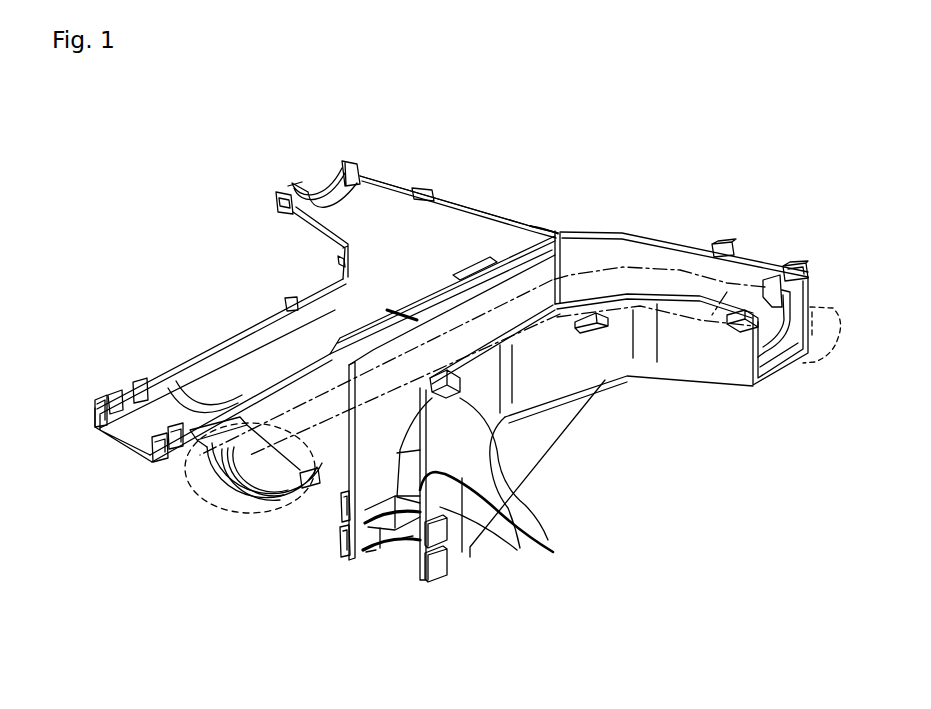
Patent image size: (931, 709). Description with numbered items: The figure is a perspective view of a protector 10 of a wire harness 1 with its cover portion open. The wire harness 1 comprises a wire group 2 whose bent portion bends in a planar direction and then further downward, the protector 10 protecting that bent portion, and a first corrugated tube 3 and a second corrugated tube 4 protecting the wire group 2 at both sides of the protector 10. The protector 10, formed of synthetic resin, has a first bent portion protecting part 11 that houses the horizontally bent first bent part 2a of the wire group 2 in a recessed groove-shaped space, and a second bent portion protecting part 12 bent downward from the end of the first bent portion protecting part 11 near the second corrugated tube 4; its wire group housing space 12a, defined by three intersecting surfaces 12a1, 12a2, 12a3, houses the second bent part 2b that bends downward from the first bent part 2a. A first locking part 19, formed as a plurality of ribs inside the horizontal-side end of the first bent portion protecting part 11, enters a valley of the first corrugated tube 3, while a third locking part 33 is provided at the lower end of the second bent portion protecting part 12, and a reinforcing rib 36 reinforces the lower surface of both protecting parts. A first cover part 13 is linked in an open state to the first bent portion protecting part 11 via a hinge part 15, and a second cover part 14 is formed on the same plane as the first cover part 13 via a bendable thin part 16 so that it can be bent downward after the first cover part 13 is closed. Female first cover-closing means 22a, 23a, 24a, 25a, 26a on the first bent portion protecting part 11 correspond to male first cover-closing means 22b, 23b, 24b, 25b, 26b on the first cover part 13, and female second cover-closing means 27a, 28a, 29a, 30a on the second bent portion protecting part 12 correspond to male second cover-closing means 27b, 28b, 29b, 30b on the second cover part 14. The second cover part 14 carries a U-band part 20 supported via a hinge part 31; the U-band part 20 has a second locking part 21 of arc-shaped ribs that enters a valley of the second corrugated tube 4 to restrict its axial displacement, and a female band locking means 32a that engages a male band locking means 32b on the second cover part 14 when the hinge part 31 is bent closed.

The wire harness 1 is at (630, 139).
The wire group 2 is at (637, 243).
The first bent part 2a is at (732, 340).
The second bent part 2b is at (333, 413).
The first corrugated tube 3 is at (805, 366).
The second corrugated tube 4 is at (193, 505).
The protector 10 is at (602, 233).
The first bent portion protecting part 11 is at (683, 235).
The second bent portion protecting part 12 is at (470, 508).
The wire group housing space 12a is at (360, 527).
The intersecting surface 12a1 is at (408, 530).
The intersecting surface 12a2 is at (372, 553).
The intersecting surface 12a3 is at (556, 552).
The first cover part 13 is at (450, 226).
The second cover part 14 is at (237, 363).
The hinge part 15 is at (558, 230).
The thin part 16 is at (300, 343).
The first locking part 19 is at (806, 315).
The U-band part 20 is at (258, 505).
The second locking part 21 is at (233, 522).
The female first cover-closing means 22a is at (800, 263).
The male first cover-closing means 22b is at (352, 160).
The female first cover-closing means 23a is at (723, 243).
The male first cover-closing means 23b is at (420, 188).
The female first cover-closing means 24a is at (743, 326).
The male first cover-closing means 24b is at (275, 205).
The female first cover-closing means 25a is at (600, 332).
The male first cover-closing means 25b is at (338, 259).
The female first cover-closing means 26a is at (462, 398).
The male first cover-closing means 26b is at (287, 299).
The female second cover-closing means 27a is at (441, 586).
The male second cover-closing means 27b is at (95, 400).
The female second cover-closing means 28a is at (442, 540).
The male second cover-closing means 28b is at (110, 395).
The female second cover-closing means 29a is at (343, 556).
The male second cover-closing means 29b is at (157, 461).
The female second cover-closing means 30a is at (343, 521).
The male second cover-closing means 30b is at (178, 450).
The hinge part 31 is at (218, 417).
The female band locking means 32a is at (302, 512).
The male band locking means 32b is at (140, 380).
The third locking part 33 is at (387, 560).
The reinforcing rib 36 is at (540, 448).